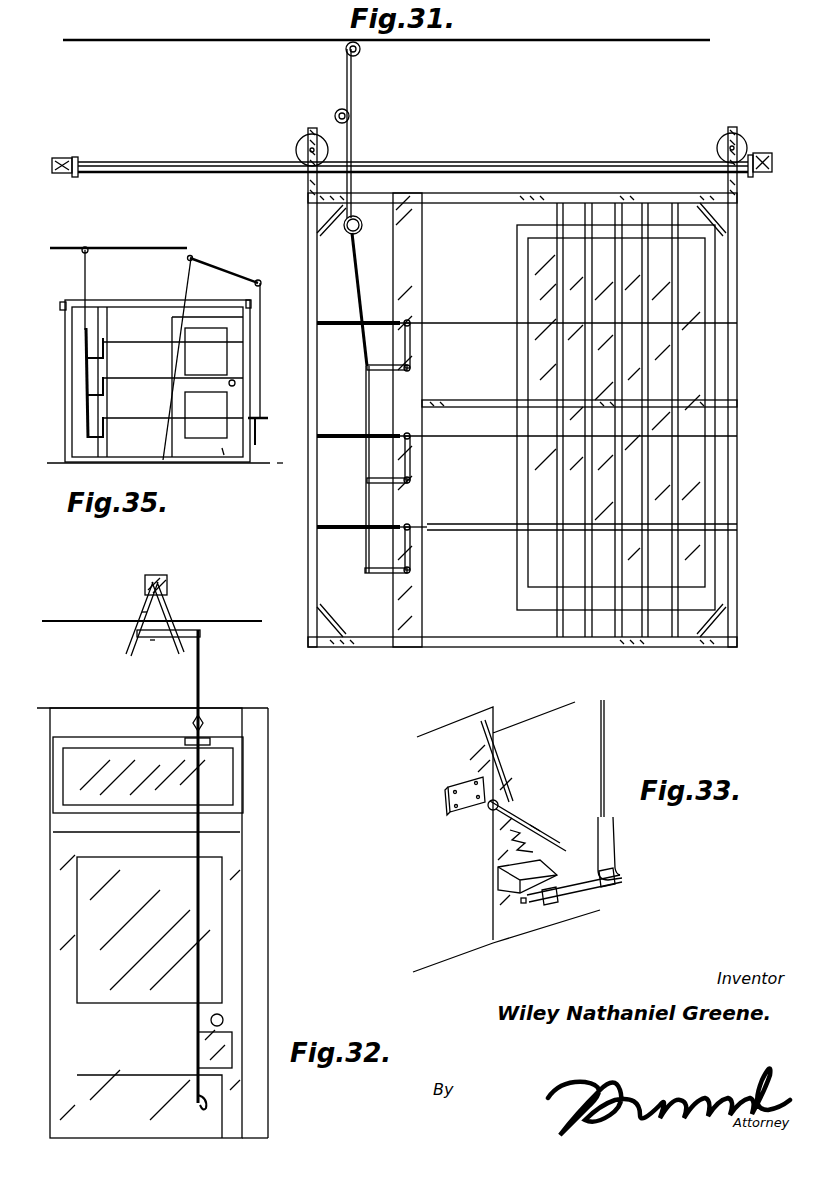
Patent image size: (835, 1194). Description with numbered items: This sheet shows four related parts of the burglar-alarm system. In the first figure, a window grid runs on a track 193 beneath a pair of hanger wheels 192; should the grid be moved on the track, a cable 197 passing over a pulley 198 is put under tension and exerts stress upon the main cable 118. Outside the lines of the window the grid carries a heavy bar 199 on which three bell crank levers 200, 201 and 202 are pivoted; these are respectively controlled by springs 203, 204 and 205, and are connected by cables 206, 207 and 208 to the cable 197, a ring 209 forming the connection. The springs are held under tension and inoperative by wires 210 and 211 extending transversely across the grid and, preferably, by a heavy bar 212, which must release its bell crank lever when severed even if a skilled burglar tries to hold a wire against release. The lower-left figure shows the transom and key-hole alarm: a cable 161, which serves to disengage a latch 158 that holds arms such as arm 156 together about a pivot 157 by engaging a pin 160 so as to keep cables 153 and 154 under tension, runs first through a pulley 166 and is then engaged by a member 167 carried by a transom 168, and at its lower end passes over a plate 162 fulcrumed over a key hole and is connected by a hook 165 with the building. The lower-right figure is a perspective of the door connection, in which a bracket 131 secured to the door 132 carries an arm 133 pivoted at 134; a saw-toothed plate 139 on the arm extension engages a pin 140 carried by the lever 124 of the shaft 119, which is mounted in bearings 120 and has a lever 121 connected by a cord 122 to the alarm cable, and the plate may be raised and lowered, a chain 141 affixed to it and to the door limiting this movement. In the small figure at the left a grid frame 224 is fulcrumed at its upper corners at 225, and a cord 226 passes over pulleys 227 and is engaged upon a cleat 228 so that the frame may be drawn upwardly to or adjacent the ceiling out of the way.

In FIG. 31, the cable 118 is at (500, 42).
In FIG. 31, the cable 197 is at (352, 126).
In FIG. 31, the pulley 198 is at (336, 110).
In FIG. 31, the track 193 is at (592, 161).
In FIG. 31, the hanger wheel 192 is at (299, 141).
In FIG. 31, the heavy bar 199 is at (424, 270).
In FIG. 31, the ring 209 is at (362, 232).
In FIG. 31, the cable 208 is at (364, 492).
In FIG. 31, the wire 210 is at (484, 322).
In FIG. 31, the spring 203 is at (341, 326).
In FIG. 31, the cable 206 is at (390, 344).
In FIG. 31, the bell crank lever 200 is at (413, 346).
In FIG. 31, the cable 207 is at (387, 383).
In FIG. 31, the wire 211 is at (485, 439).
In FIG. 31, the spring 204 is at (341, 434).
In FIG. 31, the bell crank lever 201 is at (413, 460).
In FIG. 31, the heavy bar 212 is at (476, 523).
In FIG. 31, the spring 205 is at (341, 525).
In FIG. 31, the bell crank lever 202 is at (413, 552).
In FIG. 35, the frame 224 is at (144, 300).
In FIG. 35, the cord 226 is at (230, 274).
In FIG. 35, the pulleys 227 is at (193, 259).
In FIG. 35, the cleat 228 is at (263, 418).
In FIG. 35, the fulcrums 225 is at (66, 292).
In FIG. 35, the door 132 is at (222, 448).
In FIG. 32, the door 132 is at (237, 913).
In FIG. 33, the door 132 is at (453, 937).
In FIG. 32, the cable 154 is at (92, 618).
In FIG. 32, the pivot 157 is at (160, 578).
In FIG. 32, the cable 153 is at (170, 610).
In FIG. 32, the arm 156 is at (143, 612).
In FIG. 32, the pin 160 is at (190, 630).
In FIG. 32, the latch 158 is at (152, 641).
In FIG. 32, the cable 161 is at (200, 667).
In FIG. 32, the pulley 166 is at (205, 718).
In FIG. 32, the member 167 is at (212, 740).
In FIG. 32, the transom 168 is at (237, 760).
In FIG. 32, the plate 162 is at (225, 1035).
In FIG. 32, the hook 165 is at (212, 1103).
In FIG. 33, the bracket 131 is at (455, 785).
In FIG. 33, the pivot 134 is at (488, 810).
In FIG. 33, the arm 133 is at (512, 800).
In FIG. 33, the plate 139 is at (536, 829).
In FIG. 33, the chain 141 is at (497, 757).
In FIG. 33, the pin 140 is at (500, 868).
In FIG. 33, the shaft 119 is at (580, 894).
In FIG. 33, the bearings 120 is at (608, 889).
In FIG. 33, the lever 121 is at (616, 842).
In FIG. 33, the cord 122 is at (606, 746).
In FIG. 33, the lever 124 is at (523, 906).